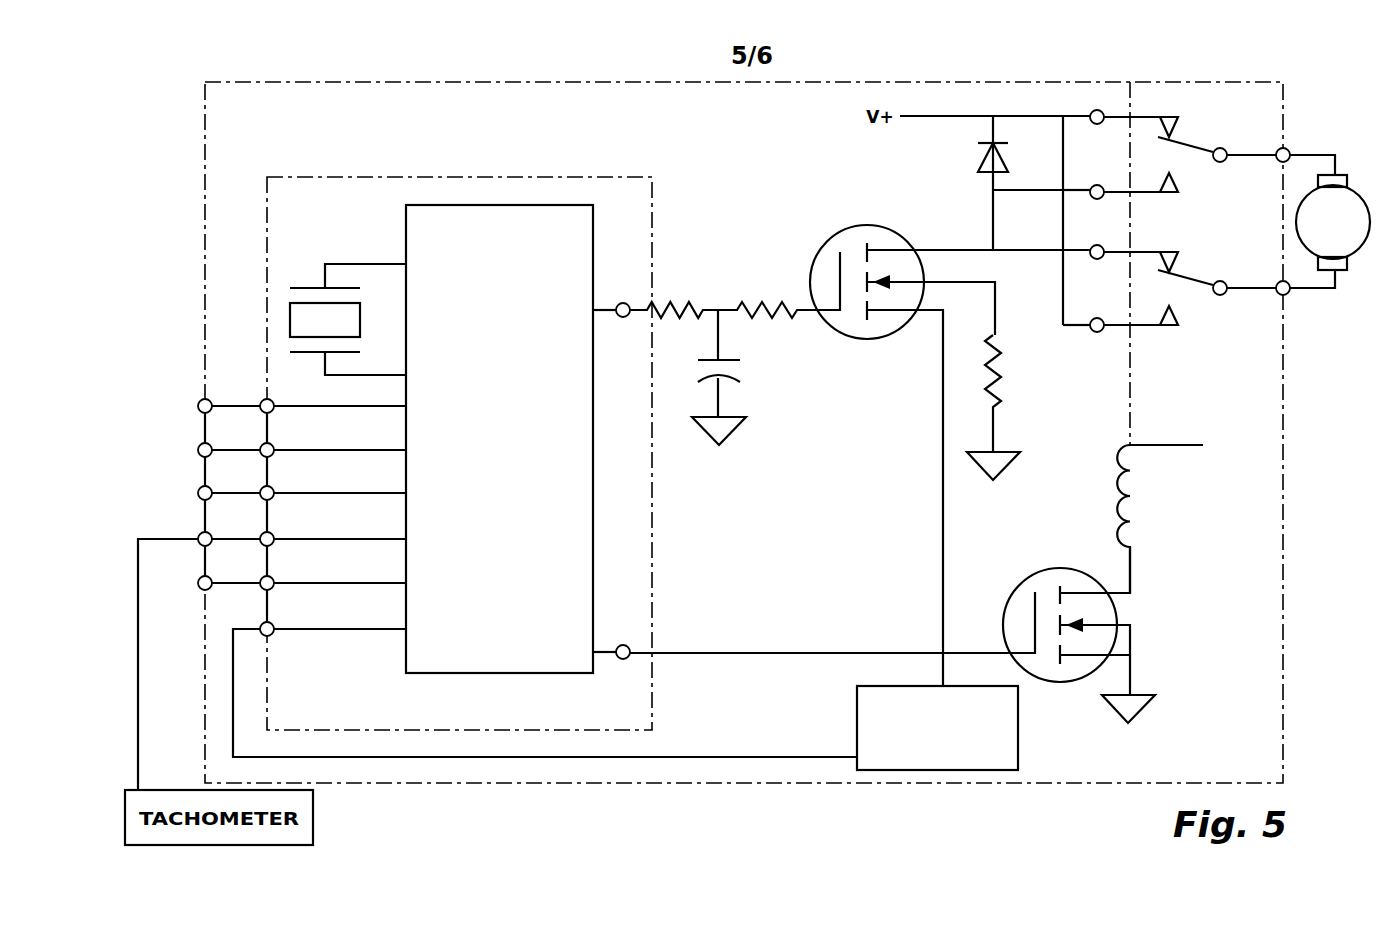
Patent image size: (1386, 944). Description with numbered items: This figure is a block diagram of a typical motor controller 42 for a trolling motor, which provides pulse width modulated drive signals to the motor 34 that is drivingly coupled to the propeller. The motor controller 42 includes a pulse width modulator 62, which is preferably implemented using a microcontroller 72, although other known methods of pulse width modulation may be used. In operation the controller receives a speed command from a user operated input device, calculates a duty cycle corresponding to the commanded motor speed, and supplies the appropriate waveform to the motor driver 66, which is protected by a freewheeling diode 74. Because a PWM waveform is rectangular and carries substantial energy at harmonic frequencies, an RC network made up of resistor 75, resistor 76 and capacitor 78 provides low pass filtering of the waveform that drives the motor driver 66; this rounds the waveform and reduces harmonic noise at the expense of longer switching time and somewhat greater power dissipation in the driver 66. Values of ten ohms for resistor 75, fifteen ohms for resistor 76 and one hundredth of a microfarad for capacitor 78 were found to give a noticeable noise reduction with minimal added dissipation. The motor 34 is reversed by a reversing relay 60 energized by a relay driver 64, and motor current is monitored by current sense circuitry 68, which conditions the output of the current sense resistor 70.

The motor controller 42 is at (205, 82).
The pulse width modulator 62 is at (590, 177).
The microcontroller 72 is at (403, 653).
The resistor 75 is at (670, 300).
The resistor 76 is at (765, 298).
The capacitor 78 is at (745, 380).
The motor driver 66 is at (850, 226).
The freewheeling diode 74 is at (978, 154).
The current sense resistor 70 is at (1000, 392).
The reversing relay 60 is at (1160, 447).
The relay driver 64 is at (1115, 612).
The current sense circuitry 68 is at (857, 697).
The motor 34 is at (1343, 203).